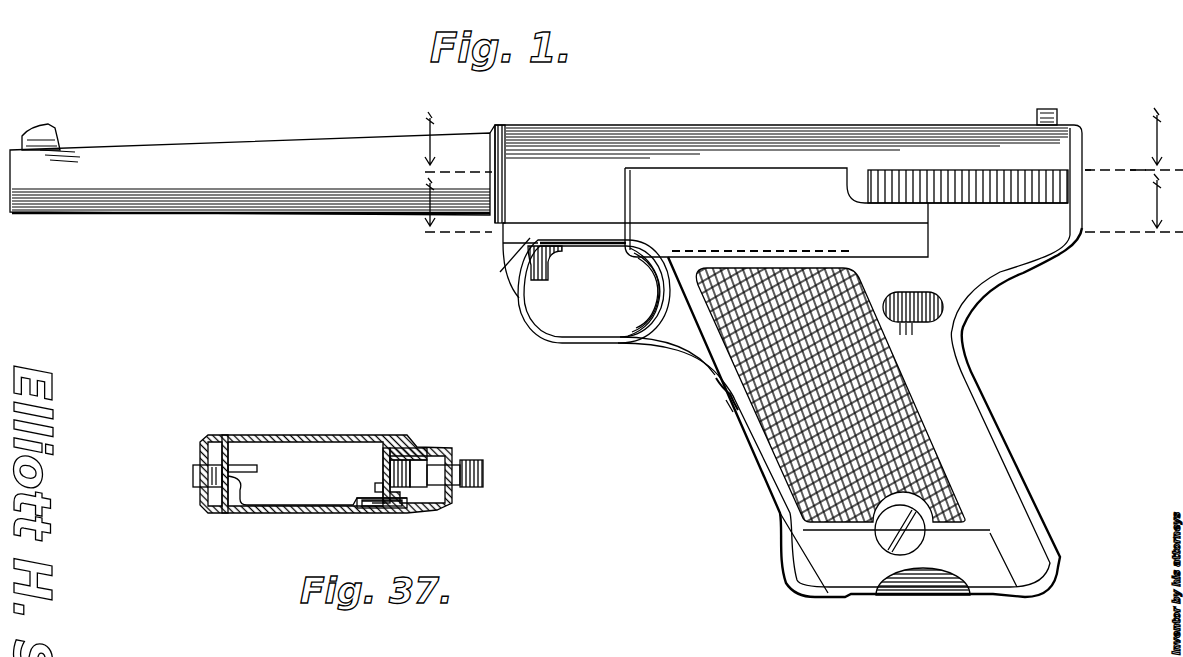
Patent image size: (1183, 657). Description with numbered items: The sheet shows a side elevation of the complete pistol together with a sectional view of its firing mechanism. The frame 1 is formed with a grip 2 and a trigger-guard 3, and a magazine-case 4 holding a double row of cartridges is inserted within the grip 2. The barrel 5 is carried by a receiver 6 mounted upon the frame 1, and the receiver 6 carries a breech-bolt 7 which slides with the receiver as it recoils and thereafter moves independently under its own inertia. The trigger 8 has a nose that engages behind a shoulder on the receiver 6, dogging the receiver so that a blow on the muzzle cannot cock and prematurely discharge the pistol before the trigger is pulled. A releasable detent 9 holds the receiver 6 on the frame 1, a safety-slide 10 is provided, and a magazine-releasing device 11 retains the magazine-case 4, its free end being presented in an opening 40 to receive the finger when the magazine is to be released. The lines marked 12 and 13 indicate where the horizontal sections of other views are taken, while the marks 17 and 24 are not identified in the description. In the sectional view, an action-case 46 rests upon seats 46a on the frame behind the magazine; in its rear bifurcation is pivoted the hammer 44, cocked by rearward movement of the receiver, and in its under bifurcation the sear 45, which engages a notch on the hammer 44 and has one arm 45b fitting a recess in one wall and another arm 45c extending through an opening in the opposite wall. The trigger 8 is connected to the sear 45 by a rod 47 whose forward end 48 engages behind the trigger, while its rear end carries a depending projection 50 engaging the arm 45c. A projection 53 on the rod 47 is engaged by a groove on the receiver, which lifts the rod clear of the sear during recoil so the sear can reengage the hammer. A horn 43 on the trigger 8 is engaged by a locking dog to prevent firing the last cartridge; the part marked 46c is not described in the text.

In FIG. 1, the frame 1 is at (776, 532).
In FIG. 37, the frame 1 is at (314, 440).
In FIG. 1, the grip 2 is at (830, 395).
In FIG. 1, the trigger-guard 3 is at (532, 332).
In FIG. 1, the magazine-case 4 is at (921, 587).
In FIG. 1, the barrel 5 is at (250, 169).
In FIG. 1, the receiver 6 is at (786, 183).
In FIG. 1, the breech-bolt 7 is at (932, 140).
In FIG. 1, the trigger 8 is at (656, 285).
In FIG. 37, the trigger 8 is at (200, 478).
In FIG. 1, the releasable detent 9 is at (550, 263).
In FIG. 1, the safety-slide 10 is at (912, 292).
In FIG. 1, the magazine-releasing device 11 is at (730, 412).
In FIG. 1, the section line 12 12 is at (788, 147).
In FIG. 1, the section line 13 13 is at (788, 210).
In FIG. 1, the frame front 17 is at (499, 260).
In FIG. 1, the recoil spring axis 24 is at (1117, 172).
In FIG. 1, the opening 40 is at (722, 386).
In FIG. 37, the horn 43 is at (252, 465).
In FIG. 37, the hammer 44 is at (442, 470).
In FIG. 37, the sear 45 is at (392, 473).
In FIG. 37, the arm of the sear 45b is at (384, 450).
In FIG. 37, the arm of the sear 45c is at (402, 508).
In FIG. 37, the action-case 46 is at (427, 443).
In FIG. 37, the seats 46a is at (407, 450).
In FIG. 37, the sleeve lug 46c is at (378, 487).
In FIG. 37, the rod 47 is at (282, 506).
In FIG. 37, the forward end of the rod 48 is at (236, 440).
In FIG. 37, the depending projection 50 is at (362, 510).
In FIG. 37, the projection 53 is at (377, 505).